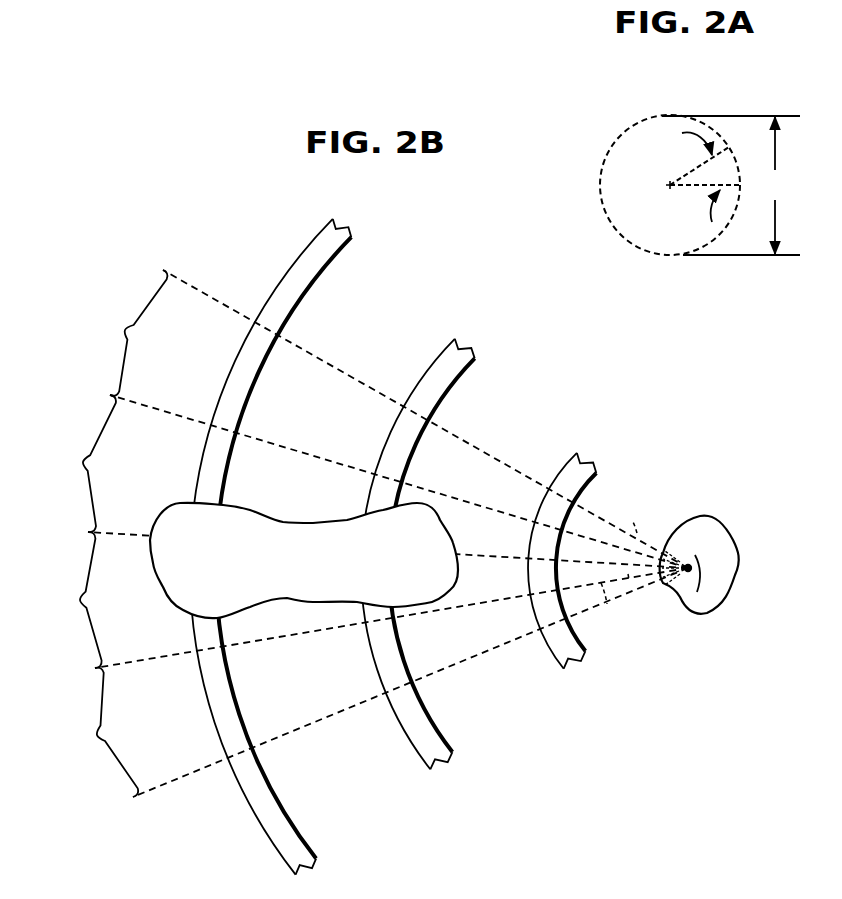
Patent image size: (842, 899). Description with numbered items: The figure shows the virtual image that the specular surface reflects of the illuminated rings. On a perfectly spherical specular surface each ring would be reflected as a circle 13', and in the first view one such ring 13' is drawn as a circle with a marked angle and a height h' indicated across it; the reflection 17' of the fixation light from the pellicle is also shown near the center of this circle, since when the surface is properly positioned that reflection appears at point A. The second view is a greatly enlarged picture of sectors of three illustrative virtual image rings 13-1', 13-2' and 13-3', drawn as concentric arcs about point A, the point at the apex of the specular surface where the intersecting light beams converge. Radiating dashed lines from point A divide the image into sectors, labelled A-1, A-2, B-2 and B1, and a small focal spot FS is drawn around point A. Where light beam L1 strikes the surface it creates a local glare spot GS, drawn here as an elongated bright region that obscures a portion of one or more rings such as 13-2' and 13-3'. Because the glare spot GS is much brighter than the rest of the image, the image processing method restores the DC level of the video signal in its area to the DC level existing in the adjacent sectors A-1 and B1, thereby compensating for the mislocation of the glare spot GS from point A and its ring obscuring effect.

In FIG. 2A, the virtual image ring 13' is at (644, 184).
In FIG. 2A, the reflection of fixation light 17' is at (690, 165).
In FIG. 2A, the array height h' is at (731, 185).
In FIG. 2B, the virtual image ring 13-3' is at (284, 533).
In FIG. 2B, the virtual image ring 13-2' is at (434, 540).
In FIG. 2B, the virtual image ring 13-1' is at (572, 547).
In FIG. 2B, the glare spot GS is at (313, 523).
In FIG. 2B, the focal spot FS is at (733, 539).
In FIG. 2B, the point A is at (690, 610).
In FIG. 2B, the sector A-1 is at (105, 333).
In FIG. 2B, the FFT sector A-2 is at (75, 463).
In FIG. 2B, the FFT sector B-2 is at (67, 600).
In FIG. 2B, the sector B1 is at (80, 732).